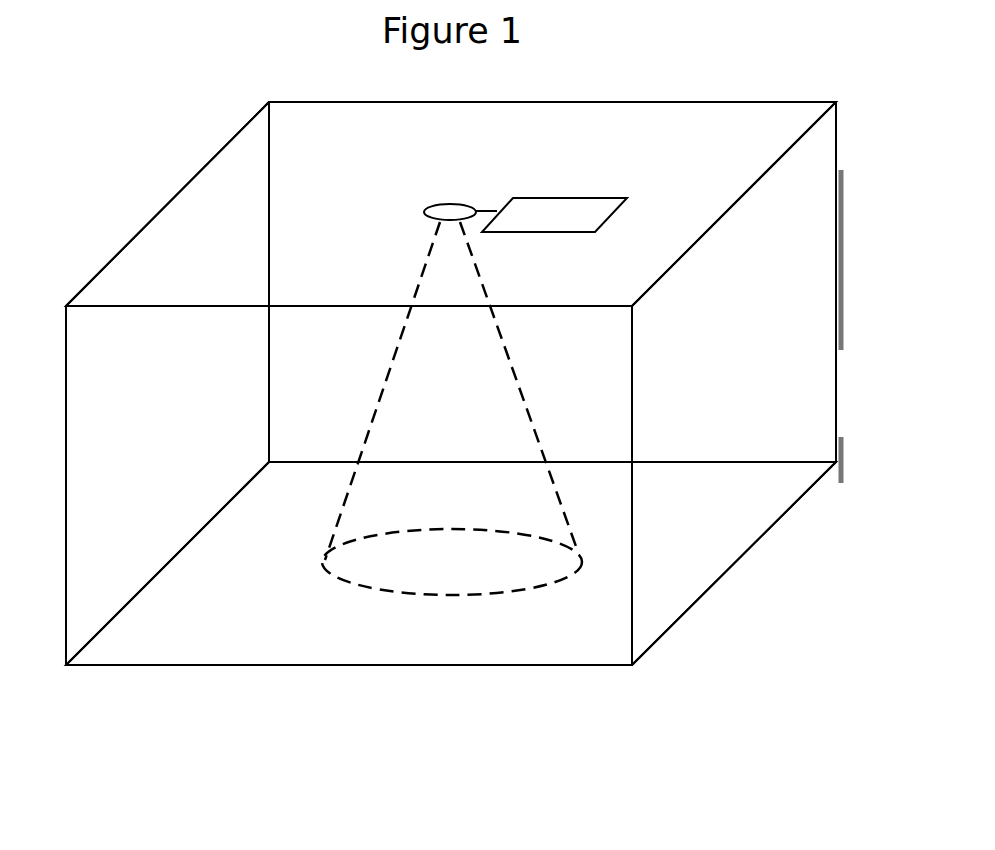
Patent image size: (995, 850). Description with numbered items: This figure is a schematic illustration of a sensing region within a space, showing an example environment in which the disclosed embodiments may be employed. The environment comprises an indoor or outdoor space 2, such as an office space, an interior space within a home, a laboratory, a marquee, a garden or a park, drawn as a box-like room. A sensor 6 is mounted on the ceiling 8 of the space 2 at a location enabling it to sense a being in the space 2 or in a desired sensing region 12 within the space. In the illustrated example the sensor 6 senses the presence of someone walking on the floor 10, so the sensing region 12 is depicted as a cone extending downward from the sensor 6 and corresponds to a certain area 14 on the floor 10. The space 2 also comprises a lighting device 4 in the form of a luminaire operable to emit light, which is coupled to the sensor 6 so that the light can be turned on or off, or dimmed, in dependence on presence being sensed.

The space 2 is at (171, 179).
The lighting device 4 is at (595, 199).
The sensor 6 is at (456, 212).
The ceiling 8 is at (695, 110).
The floor 10 is at (540, 655).
The sensing region 12 is at (510, 408).
The area 14 is at (360, 584).